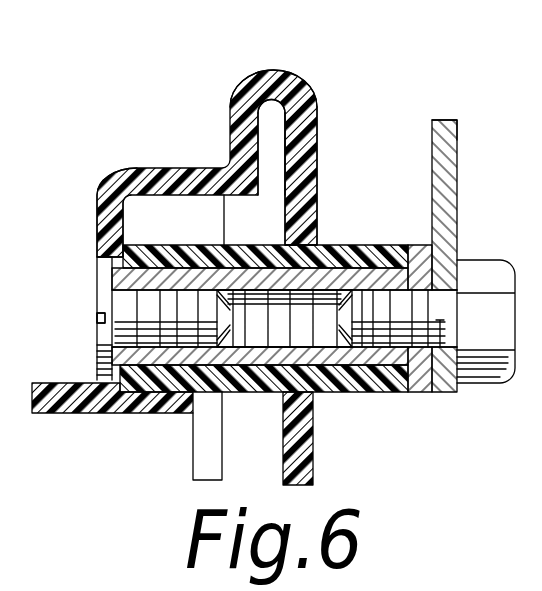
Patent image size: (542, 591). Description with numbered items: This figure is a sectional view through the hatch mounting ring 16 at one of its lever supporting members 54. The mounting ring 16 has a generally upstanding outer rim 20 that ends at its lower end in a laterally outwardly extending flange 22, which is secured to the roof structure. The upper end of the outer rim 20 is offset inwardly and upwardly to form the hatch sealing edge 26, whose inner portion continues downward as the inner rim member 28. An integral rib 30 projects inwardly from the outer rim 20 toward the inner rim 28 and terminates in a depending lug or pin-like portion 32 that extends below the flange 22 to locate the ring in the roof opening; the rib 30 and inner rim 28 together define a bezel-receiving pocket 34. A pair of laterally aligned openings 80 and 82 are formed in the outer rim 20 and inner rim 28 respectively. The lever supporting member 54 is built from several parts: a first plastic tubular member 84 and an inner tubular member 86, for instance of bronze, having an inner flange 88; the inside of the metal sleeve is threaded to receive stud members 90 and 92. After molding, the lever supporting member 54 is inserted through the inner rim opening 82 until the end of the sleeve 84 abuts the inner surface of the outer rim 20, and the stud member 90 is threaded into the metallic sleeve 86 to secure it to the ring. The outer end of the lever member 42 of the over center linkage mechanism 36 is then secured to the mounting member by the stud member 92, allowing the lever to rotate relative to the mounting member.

The hatch mounting ring 16 is at (141, 165).
The outer rim 20 is at (101, 205).
The flange 22 is at (84, 400).
The hatch sealing edge 26 is at (287, 77).
The inner rim member 28 is at (300, 147).
The rib 30 is at (205, 217).
The lug or pin-like portion 32 is at (200, 472).
The bezel-receiving pocket 34 is at (257, 450).
The over center linkage mechanism 36 is at (462, 170).
The lever member 42 is at (445, 120).
The lever supporting member 54 is at (385, 398).
The opening 80 is at (96, 265).
The opening 82 is at (303, 252).
The plastic tubular member 84 is at (398, 257).
The inner tubular member 86 is at (172, 280).
The inner flange 88 is at (421, 383).
The stud member 90 is at (97, 306).
The stud member 92 is at (490, 258).